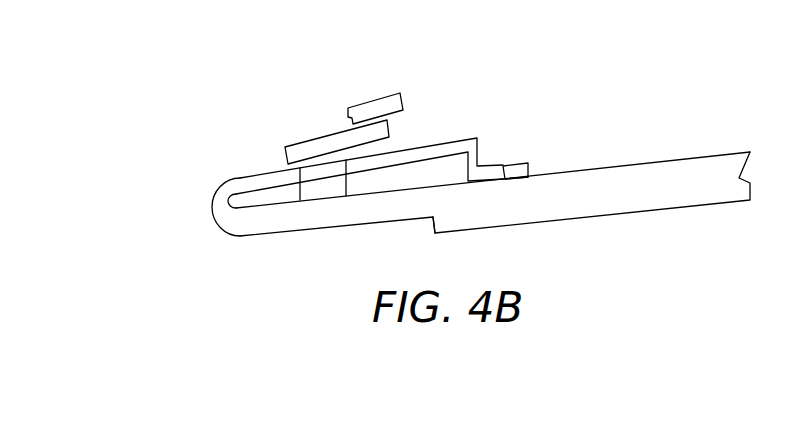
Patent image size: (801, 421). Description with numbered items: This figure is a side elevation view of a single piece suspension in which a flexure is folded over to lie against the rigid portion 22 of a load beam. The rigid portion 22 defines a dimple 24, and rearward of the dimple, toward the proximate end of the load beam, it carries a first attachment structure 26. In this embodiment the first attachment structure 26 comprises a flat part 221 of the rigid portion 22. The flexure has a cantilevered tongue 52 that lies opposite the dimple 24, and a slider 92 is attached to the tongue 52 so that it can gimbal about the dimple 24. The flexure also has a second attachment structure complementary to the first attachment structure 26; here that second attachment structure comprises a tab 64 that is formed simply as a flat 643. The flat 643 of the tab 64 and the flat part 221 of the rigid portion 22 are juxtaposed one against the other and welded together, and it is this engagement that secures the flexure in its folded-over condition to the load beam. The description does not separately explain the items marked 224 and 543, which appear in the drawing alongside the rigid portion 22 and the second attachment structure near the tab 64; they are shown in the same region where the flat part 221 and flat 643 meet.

The rigid portion 22 is at (677, 206).
The dimple 24 is at (318, 190).
The first attachment structure 26 is at (508, 195).
The flexure tongue 52 is at (318, 137).
The tab 64 is at (522, 164).
The slider 92 is at (386, 95).
The flat part 221 is at (503, 165).
The step portion 224 is at (485, 182).
The curved portion 543 is at (535, 150).
The flat 643 is at (518, 180).